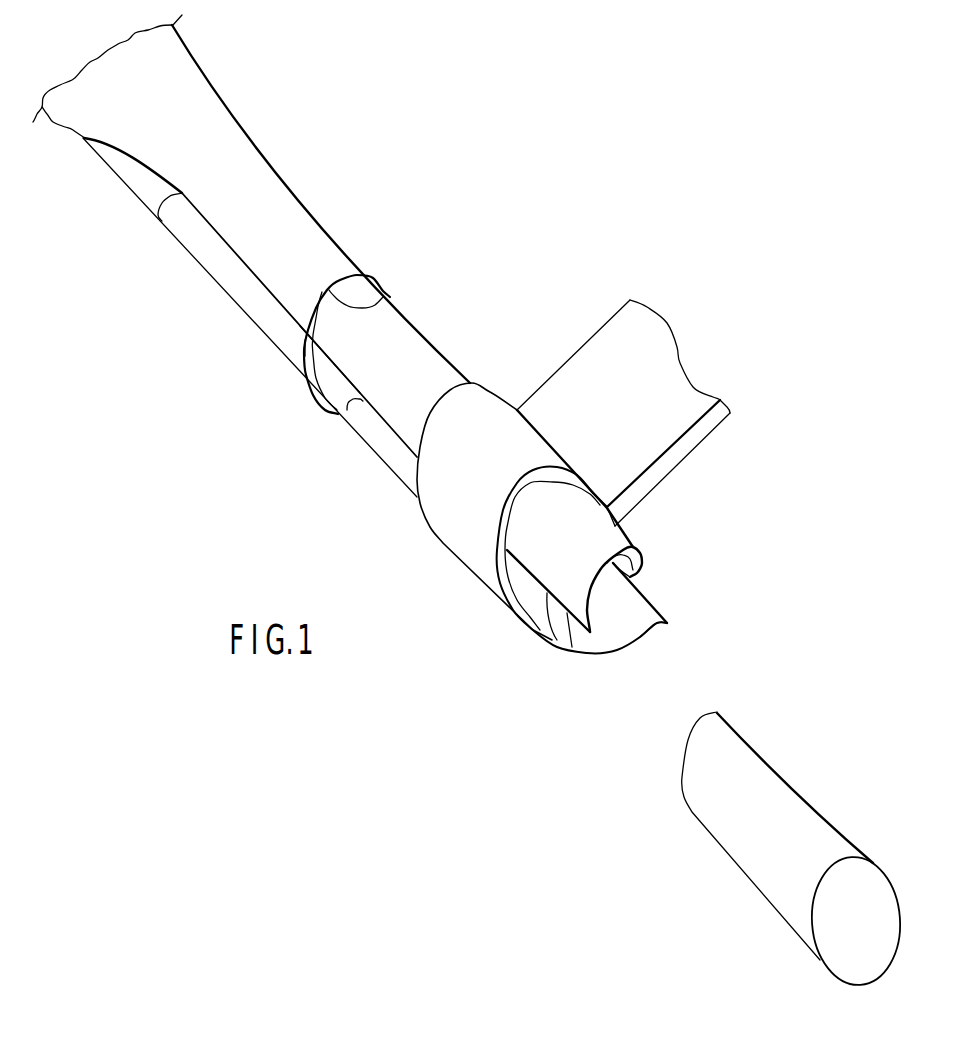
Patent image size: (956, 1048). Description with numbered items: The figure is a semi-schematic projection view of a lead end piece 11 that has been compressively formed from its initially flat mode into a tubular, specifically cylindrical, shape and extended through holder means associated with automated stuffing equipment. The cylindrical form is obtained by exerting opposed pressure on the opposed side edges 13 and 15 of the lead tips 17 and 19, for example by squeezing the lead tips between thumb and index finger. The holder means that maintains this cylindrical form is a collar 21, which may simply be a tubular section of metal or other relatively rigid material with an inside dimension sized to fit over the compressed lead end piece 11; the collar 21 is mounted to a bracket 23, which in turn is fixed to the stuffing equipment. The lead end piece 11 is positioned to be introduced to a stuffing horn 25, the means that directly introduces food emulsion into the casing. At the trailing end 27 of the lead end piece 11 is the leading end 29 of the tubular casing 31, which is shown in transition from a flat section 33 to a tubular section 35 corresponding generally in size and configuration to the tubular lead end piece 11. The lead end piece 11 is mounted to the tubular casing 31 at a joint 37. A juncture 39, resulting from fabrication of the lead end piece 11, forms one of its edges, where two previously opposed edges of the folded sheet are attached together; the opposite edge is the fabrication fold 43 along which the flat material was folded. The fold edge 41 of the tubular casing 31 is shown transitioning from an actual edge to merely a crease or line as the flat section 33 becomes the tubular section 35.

The lead end piece 11 is at (380, 442).
The side edge 13 is at (640, 593).
The side edge 15 is at (572, 630).
The lead tip 17 is at (667, 623).
The lead tip 19 is at (590, 607).
The collar 21 is at (463, 550).
The bracket 23 is at (697, 444).
The stuffing horn 25 is at (740, 872).
The trailing end 27 is at (357, 293).
The leading end 29 is at (390, 297).
The tubular casing 31 is at (302, 79).
The flat section 33 is at (79, 114).
The tubular section 35 is at (250, 303).
The joint 37 is at (310, 387).
The juncture 39 is at (347, 410).
The fold edge 41 is at (160, 220).
The fabrication fold 43 is at (617, 570).